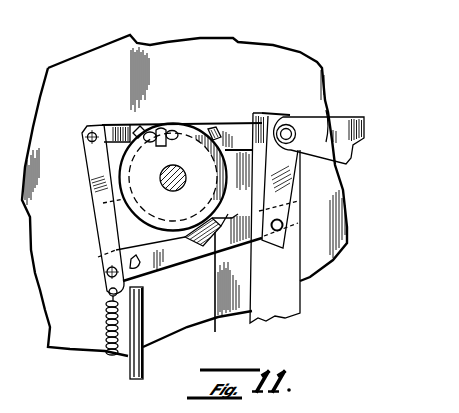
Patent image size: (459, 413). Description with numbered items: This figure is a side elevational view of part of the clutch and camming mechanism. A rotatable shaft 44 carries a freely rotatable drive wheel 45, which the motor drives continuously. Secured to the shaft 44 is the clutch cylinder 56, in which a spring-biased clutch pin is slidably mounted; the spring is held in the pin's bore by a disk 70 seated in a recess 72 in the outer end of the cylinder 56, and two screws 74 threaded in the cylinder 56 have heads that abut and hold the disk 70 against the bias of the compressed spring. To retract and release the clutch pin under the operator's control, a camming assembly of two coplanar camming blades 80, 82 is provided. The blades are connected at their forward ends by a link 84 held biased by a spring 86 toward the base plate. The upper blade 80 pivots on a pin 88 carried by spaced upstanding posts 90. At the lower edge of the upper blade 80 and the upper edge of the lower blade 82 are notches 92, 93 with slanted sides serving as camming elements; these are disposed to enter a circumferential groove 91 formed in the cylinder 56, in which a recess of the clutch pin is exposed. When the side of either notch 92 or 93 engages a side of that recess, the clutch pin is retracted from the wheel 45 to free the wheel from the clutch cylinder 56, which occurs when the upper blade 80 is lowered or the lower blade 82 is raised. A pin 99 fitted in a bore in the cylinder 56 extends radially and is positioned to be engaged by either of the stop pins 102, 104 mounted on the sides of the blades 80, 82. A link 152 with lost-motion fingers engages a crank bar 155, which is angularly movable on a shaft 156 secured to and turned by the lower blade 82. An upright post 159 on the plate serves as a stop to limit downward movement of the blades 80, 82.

The shaft 44 is at (176, 167).
The drive wheel 45 is at (76, 328).
The clutch cylinder 56 is at (173, 207).
The disk 70 is at (159, 137).
The recess 72 is at (158, 130).
The screws 74 is at (157, 138).
The upper camming blade 80 is at (351, 116).
The lower camming blade 82 is at (203, 258).
The link 84 is at (105, 223).
The spring 86 is at (116, 358).
The pin 88 is at (272, 112).
The posts 90 is at (281, 293).
The circumferential groove 91 is at (103, 203).
The notch 92 is at (128, 126).
The notch 93 is at (215, 332).
The pin 99 is at (209, 127).
The stop pin 102 is at (231, 143).
The stop pin 104 is at (139, 256).
The link 152 is at (326, 110).
The crank bar 155 is at (279, 176).
The shaft 156 is at (292, 216).
The post 159 is at (144, 358).